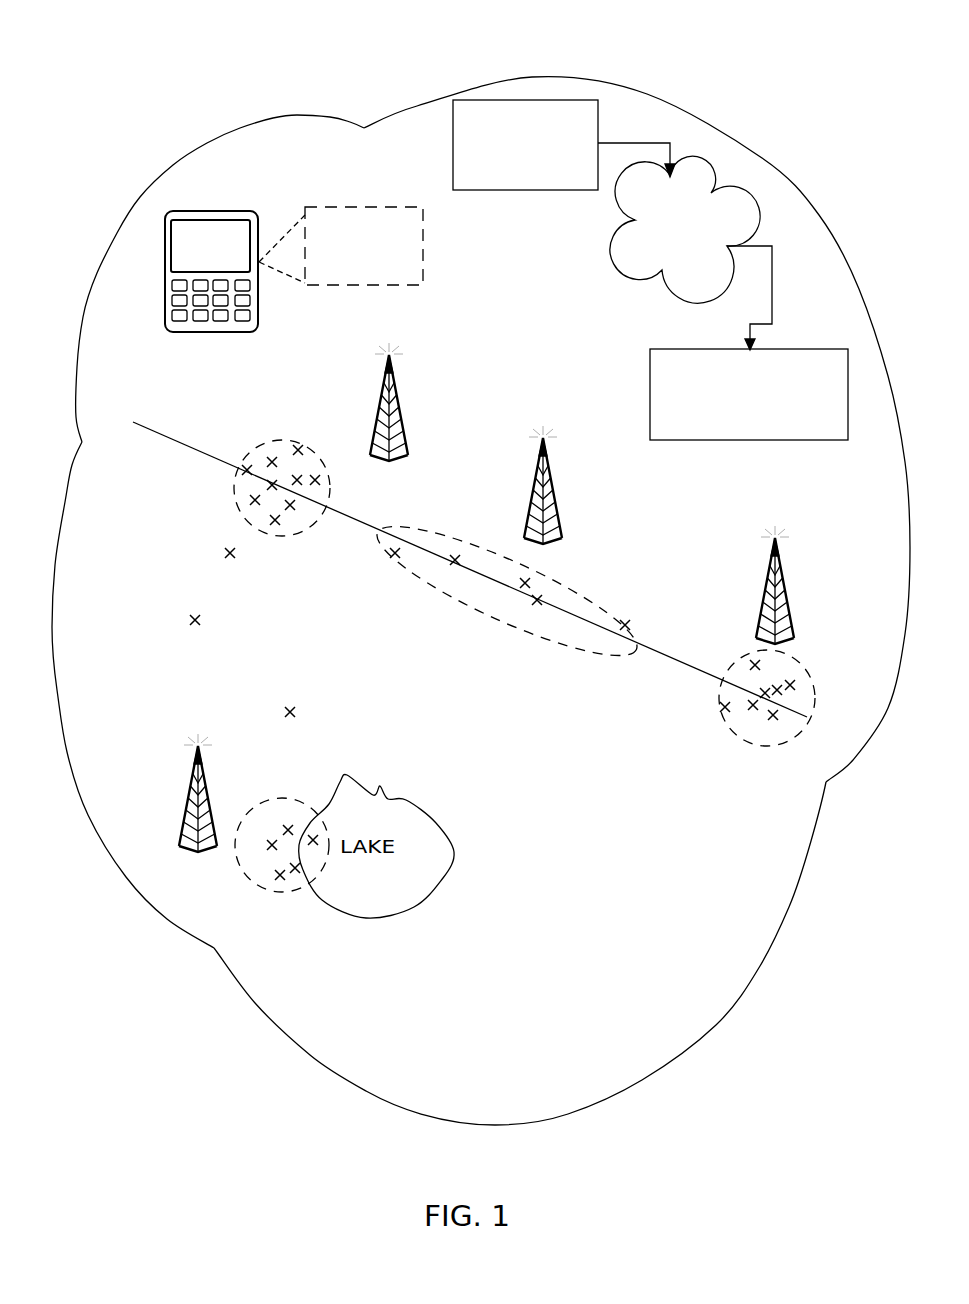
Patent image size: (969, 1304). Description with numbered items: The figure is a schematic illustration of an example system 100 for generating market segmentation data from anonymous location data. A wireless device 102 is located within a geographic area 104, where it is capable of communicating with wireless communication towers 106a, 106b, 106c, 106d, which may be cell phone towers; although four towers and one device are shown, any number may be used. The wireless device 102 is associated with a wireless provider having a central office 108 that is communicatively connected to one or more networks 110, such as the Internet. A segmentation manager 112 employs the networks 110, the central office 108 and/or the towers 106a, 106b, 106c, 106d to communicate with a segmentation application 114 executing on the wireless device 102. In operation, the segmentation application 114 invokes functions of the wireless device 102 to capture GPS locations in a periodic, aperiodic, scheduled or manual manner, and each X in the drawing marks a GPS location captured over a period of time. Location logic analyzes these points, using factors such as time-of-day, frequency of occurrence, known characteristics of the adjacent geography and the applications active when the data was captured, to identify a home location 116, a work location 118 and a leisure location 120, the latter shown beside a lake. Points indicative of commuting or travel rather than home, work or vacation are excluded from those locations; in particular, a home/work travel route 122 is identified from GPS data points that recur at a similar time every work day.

The system 100 is at (122, 48).
The wireless device 102 is at (257, 327).
The geographic area 104 is at (506, 78).
The wireless communication tower 106a is at (398, 405).
The wireless communication tower 106b is at (552, 490).
The wireless communication tower 106c is at (765, 580).
The wireless communication tower 106d is at (190, 790).
The central office 108 is at (564, 145).
The networks 110 is at (691, 253).
The segmentation manager 112 is at (749, 394).
The segmentation application 114 is at (341, 246).
The home location 116 is at (283, 536).
The work location 118 is at (735, 740).
The leisure location 120 is at (267, 895).
The home/work travel route 122 is at (510, 622).